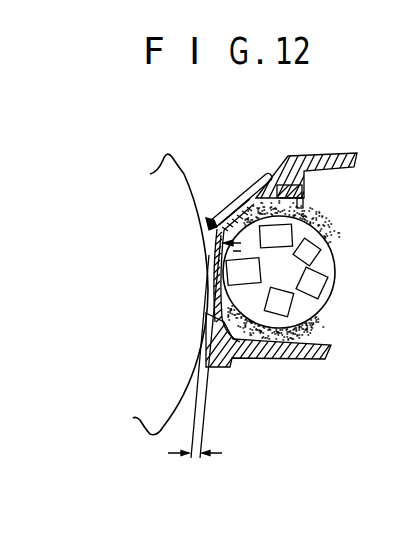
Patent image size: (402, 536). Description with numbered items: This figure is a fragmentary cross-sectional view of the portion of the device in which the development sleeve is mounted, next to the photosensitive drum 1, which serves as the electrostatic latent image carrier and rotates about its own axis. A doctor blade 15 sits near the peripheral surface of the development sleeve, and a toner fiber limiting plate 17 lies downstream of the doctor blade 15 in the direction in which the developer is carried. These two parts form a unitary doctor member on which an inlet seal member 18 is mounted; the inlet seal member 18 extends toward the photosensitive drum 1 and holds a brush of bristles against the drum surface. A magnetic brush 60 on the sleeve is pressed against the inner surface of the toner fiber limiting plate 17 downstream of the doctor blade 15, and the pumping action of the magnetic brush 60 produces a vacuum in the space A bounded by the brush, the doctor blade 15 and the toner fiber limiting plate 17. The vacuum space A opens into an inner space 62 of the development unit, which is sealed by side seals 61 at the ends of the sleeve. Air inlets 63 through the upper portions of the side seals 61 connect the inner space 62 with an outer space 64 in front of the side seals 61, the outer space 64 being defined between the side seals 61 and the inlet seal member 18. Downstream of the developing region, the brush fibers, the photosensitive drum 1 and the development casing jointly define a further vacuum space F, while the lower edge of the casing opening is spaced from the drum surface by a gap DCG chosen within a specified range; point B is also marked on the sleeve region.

The photosensitive drum 1 is at (178, 181).
The doctor blade 15 is at (307, 189).
The toner fiber limiting plate 17 is at (272, 177).
The inlet seal member 18 is at (236, 203).
The magnetic brush 60 is at (249, 194).
The side seals 61 is at (213, 279).
The inner space 62 is at (250, 247).
The air inlets 63 is at (213, 251).
The outer space 64 is at (214, 239).
The vacuum space A is at (308, 204).
The point B is at (253, 183).
The vacuum space F is at (249, 333).
The gap DCG is at (202, 362).